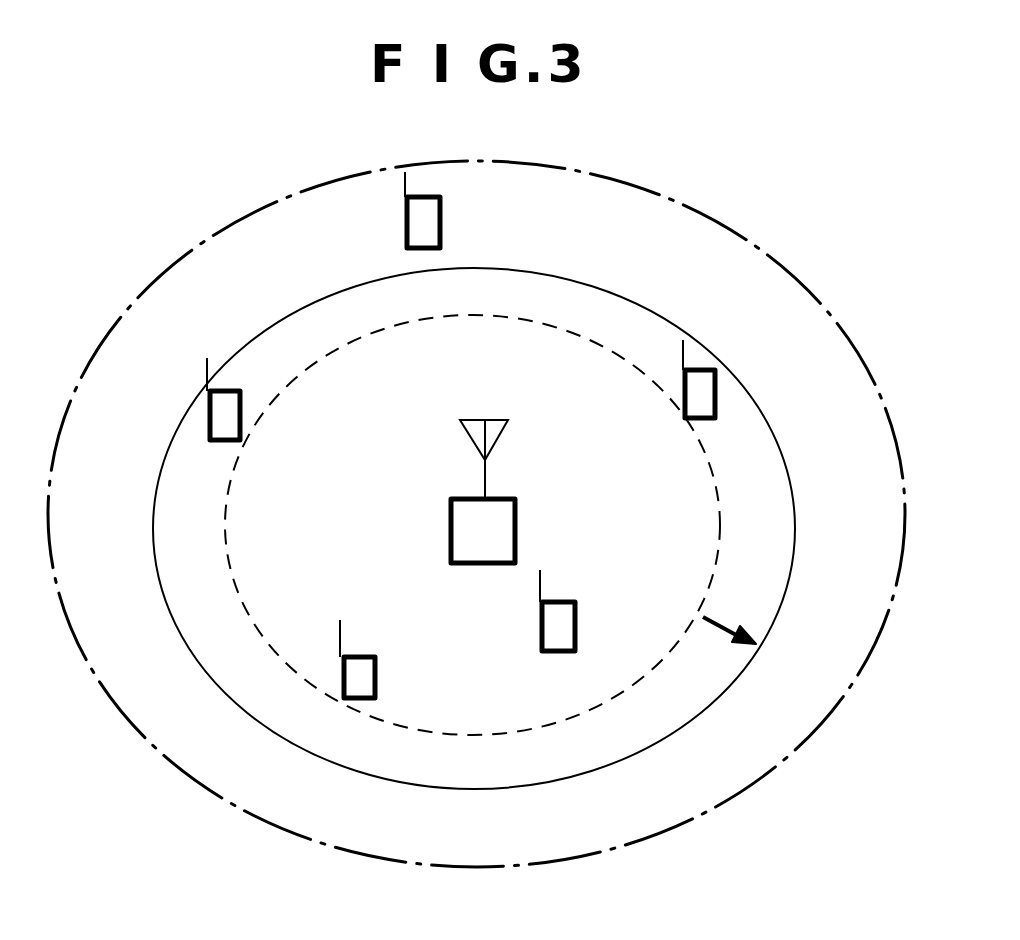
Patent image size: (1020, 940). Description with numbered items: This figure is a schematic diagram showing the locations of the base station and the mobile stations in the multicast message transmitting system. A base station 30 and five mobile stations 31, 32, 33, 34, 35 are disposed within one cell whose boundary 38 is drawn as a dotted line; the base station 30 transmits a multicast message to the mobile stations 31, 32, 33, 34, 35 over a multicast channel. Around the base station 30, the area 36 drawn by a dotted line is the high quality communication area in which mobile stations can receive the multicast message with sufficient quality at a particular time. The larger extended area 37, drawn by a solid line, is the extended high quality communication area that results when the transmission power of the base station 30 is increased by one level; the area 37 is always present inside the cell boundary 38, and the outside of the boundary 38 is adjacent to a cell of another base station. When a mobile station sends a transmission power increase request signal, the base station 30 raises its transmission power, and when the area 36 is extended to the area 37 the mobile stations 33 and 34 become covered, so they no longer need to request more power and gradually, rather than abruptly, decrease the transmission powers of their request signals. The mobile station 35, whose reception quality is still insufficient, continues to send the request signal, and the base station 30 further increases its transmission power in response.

The base station 30 is at (451, 523).
The mobile station 31 is at (377, 678).
The mobile station 32 is at (577, 623).
The mobile station 33 is at (213, 410).
The mobile station 34 is at (716, 386).
The mobile station 35 is at (418, 220).
The high quality communication area 36 is at (447, 316).
The extended high quality communication area 37 is at (177, 630).
The cell boundary 38 is at (312, 845).